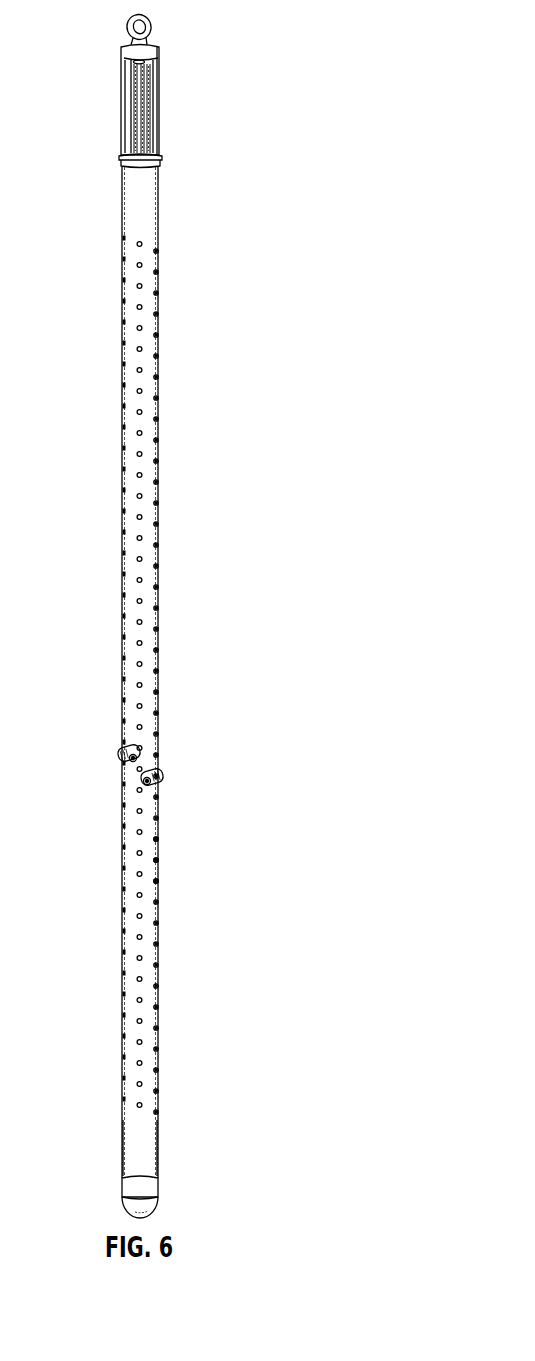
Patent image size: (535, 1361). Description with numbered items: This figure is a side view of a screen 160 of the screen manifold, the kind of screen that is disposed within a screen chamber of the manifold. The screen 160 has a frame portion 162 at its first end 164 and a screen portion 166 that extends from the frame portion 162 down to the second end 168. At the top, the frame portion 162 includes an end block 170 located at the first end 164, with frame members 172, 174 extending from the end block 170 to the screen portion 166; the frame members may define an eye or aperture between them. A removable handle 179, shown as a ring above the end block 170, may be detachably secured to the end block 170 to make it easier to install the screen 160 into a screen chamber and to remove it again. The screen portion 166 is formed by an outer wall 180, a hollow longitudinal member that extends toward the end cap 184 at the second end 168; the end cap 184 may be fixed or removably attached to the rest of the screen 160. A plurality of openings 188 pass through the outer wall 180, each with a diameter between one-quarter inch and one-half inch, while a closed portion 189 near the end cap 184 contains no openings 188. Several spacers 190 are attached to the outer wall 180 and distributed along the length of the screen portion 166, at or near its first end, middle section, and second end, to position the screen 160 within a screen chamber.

The screen 160 is at (328, 90).
The frame portion 162 is at (200, 145).
The first end 164 is at (122, 45).
The screen portion 166 is at (233, 673).
The second end 168 is at (122, 1212).
The end block 170 is at (158, 52).
The frame member 172 is at (130, 110).
The frame member 174 is at (148, 125).
The removable handle 179 is at (152, 32).
The outer wall 180 is at (147, 283).
The end cap 184 is at (148, 1207).
The openings 188 is at (157, 878).
The closed portion 189 is at (145, 1146).
The spacers 190 is at (118, 165).